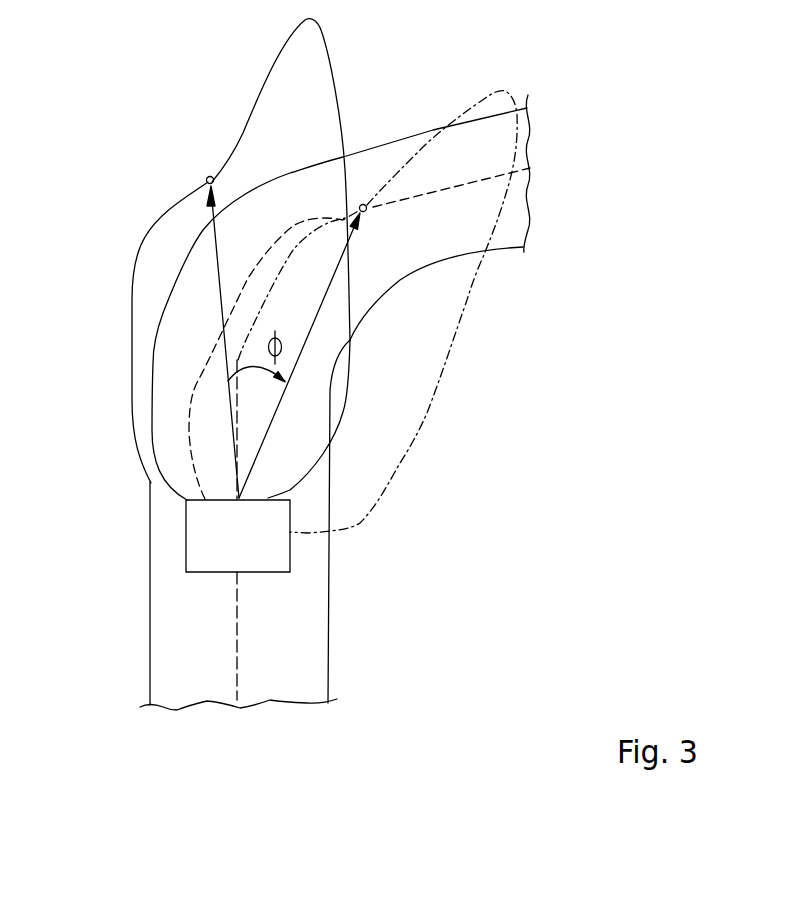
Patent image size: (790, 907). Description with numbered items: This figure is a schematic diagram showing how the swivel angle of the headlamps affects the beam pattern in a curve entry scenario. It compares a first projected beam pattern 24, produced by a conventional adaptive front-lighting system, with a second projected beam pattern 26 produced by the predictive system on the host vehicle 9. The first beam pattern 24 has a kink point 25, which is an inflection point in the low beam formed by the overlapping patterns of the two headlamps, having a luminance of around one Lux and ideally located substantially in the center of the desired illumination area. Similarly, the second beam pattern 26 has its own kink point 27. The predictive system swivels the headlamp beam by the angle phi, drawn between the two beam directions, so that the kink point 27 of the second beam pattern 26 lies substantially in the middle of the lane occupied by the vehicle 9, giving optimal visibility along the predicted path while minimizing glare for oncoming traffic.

The vehicle 9 is at (202, 544).
The first projected beam pattern 24 is at (133, 317).
The kink point 25 is at (207, 176).
The second projected beam pattern 26 is at (447, 363).
The kink point 27 is at (366, 205).